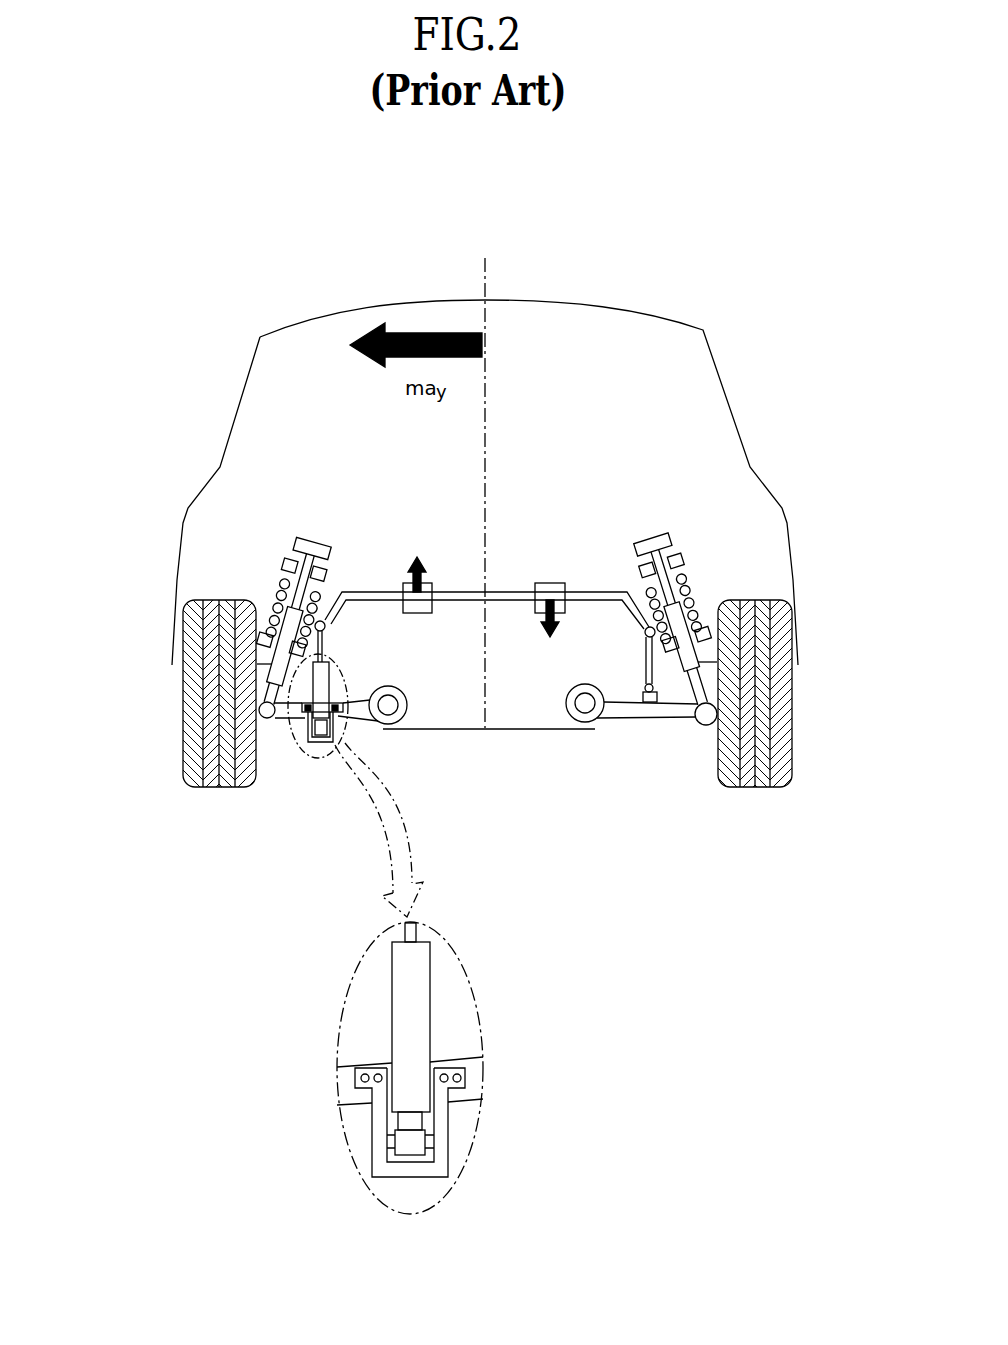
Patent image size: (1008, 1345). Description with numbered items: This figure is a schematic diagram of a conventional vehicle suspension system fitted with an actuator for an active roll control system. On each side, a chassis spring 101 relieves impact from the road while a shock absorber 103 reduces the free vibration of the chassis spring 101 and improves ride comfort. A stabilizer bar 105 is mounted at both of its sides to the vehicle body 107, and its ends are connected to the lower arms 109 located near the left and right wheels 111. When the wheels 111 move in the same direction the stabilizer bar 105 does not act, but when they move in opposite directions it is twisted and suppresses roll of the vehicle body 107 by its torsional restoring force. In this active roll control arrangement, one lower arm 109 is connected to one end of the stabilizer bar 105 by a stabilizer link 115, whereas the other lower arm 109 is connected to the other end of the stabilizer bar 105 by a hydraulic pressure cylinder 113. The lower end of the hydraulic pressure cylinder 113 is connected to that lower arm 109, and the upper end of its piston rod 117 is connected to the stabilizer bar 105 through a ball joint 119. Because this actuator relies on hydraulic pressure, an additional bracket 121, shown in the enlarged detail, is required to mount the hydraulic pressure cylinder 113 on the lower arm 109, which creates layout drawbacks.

The chassis spring 101 is at (287, 575).
The shock absorber 103 is at (287, 622).
The stabilizer bar 105 is at (553, 640).
The vehicle body 107 is at (728, 392).
The lower arm 109 is at (296, 729).
The wheel 111 is at (192, 745).
The hydraulic pressure cylinder 113 is at (300, 683).
The stabilizer link 115 is at (648, 665).
The piston rod 117 is at (260, 663).
The ball joint 119 is at (337, 625).
The bracket 121 is at (443, 1152).